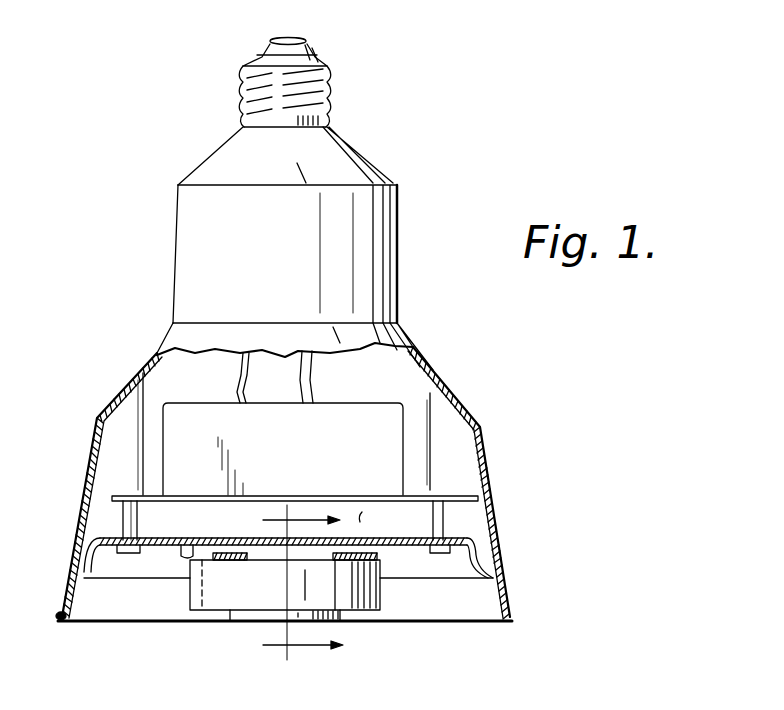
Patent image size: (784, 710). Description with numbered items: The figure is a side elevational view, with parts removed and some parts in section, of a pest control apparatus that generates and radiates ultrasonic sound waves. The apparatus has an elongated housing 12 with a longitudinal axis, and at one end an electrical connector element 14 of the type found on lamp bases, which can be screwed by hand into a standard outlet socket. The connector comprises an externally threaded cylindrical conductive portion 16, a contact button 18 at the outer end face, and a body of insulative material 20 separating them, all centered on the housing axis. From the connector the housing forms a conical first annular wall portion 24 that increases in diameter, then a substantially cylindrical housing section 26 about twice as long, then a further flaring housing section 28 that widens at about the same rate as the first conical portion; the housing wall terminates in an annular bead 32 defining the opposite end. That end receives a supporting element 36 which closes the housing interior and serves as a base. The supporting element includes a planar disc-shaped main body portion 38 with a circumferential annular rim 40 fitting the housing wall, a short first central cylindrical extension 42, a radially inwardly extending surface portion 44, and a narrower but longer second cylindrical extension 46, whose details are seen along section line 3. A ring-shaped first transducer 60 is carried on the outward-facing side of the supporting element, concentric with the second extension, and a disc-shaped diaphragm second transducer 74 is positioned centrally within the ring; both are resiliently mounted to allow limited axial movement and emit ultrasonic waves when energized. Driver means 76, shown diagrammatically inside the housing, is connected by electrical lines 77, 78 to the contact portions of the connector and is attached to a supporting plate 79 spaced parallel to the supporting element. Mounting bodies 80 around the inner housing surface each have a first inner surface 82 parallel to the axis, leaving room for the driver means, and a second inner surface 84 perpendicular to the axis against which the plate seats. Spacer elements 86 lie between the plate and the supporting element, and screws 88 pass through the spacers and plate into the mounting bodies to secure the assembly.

The section line 3- 3 is at (290, 593).
The housing 12 is at (160, 202).
The electrical connector element 14 is at (345, 95).
The cylindrical conductive portion 16 is at (243, 90).
The conductive element 18 is at (272, 41).
The body of insulative material 20 is at (307, 50).
The first annular wall portion 24 is at (373, 168).
The housing section 26 is at (180, 268).
The housing section 28 is at (140, 363).
The annular bead 32 is at (517, 615).
The supporting element 36 is at (170, 559).
The main body portion 38 is at (160, 546).
The annular rim 40 is at (107, 575).
The first central cylindrical extension 42 is at (207, 538).
The radially inwardly extending surface portion 44 is at (213, 548).
The second cylindrical extension 46 is at (258, 566).
The first transducer means 60 is at (380, 597).
The second transducer means 74 is at (348, 634).
The driver means 76 is at (382, 470).
The electrical line 77 is at (242, 380).
The electrical line 78 is at (313, 372).
The supporting plate 79 is at (373, 520).
The mounting bodies 80 is at (112, 436).
The first inner surface 82 is at (147, 418).
The second inner surface 84 is at (105, 497).
The spacer elements 86 is at (120, 520).
The screws 88 is at (127, 553).